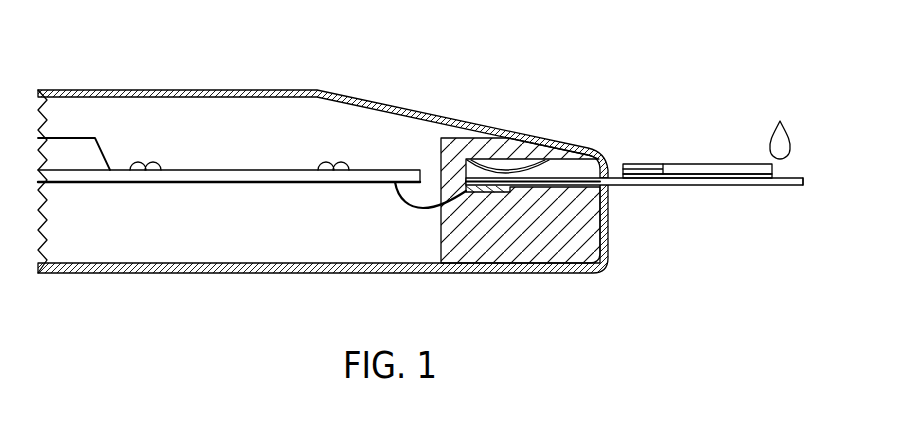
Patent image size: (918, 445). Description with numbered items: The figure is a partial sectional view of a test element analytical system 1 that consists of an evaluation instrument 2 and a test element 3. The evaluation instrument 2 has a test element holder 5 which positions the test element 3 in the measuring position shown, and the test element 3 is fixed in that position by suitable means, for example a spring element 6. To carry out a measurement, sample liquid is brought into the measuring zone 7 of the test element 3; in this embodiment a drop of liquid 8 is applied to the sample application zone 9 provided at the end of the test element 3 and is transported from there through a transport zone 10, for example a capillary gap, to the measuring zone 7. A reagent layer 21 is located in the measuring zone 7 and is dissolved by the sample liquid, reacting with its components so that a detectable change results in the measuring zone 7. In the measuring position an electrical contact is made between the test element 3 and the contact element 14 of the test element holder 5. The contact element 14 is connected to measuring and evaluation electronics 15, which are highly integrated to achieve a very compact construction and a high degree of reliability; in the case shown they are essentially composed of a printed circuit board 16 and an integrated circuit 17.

The test element analytical system 1 is at (422, 100).
The evaluation instrument 2 is at (320, 86).
The test element 3 is at (712, 186).
The test element holder 5 is at (560, 262).
The spring element 6 is at (492, 168).
The measuring zone 7 is at (666, 158).
The drop of liquid 8 is at (773, 138).
The sample application zone 9 is at (800, 166).
The transport zone 10 is at (688, 163).
The contact element 14 is at (500, 193).
The measuring and evaluation electronics 15 is at (120, 140).
The printed circuit board 16 is at (178, 168).
The integrated circuit 17 is at (63, 147).
The reagent layer 21 is at (642, 178).